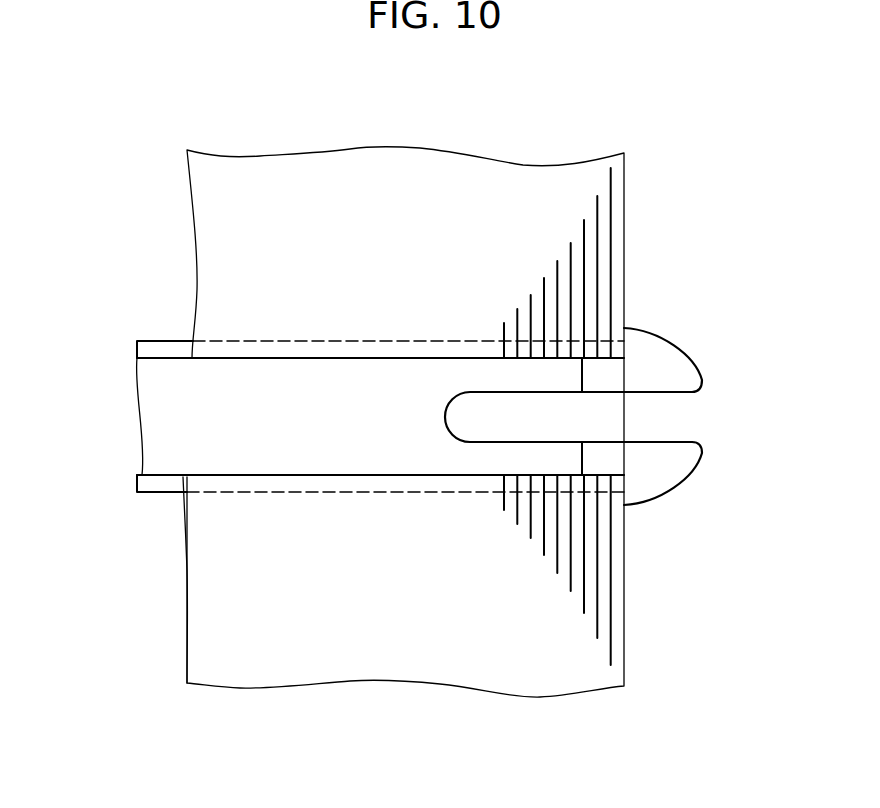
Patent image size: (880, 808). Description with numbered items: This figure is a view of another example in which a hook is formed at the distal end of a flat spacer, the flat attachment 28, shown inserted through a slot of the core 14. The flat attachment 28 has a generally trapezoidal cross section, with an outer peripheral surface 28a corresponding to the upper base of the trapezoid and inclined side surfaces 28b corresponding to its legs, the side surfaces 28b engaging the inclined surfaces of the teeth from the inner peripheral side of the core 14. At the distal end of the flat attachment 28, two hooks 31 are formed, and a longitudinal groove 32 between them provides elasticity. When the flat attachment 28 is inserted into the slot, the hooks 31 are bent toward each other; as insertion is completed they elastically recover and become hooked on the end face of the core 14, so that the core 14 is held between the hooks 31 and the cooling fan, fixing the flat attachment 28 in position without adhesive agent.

The core 14 is at (388, 653).
The flat attachment 28 is at (173, 413).
The outer peripheral surface 28a is at (257, 377).
The side surfaces 28b is at (157, 348).
The hooks 31 is at (660, 360).
The longitudinal groove 32 is at (667, 393).